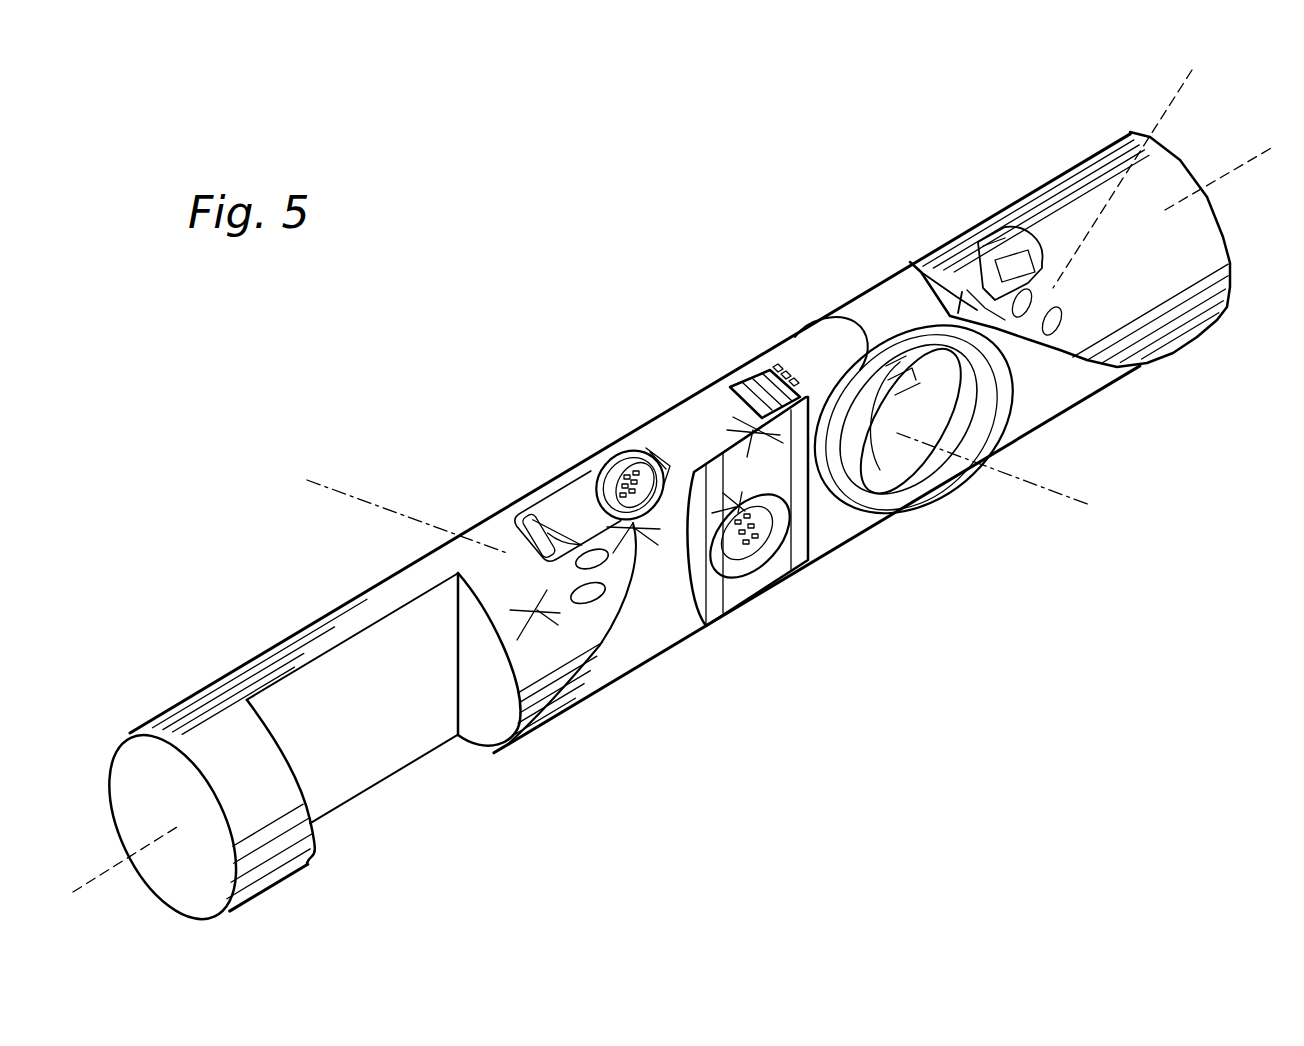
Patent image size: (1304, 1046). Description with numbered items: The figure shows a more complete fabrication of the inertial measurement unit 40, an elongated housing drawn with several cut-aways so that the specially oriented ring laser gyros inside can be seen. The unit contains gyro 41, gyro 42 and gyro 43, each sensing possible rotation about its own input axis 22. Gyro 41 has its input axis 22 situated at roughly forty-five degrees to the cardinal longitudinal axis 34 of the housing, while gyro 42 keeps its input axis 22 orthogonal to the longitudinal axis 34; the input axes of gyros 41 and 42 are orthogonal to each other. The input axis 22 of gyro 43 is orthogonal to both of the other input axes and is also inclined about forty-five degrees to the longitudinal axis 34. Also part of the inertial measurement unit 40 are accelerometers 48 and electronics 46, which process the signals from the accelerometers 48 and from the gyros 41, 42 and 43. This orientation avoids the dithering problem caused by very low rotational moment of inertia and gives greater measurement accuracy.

The input axis 22 is at (345, 497).
The cardinal longitudinal axis 34 is at (115, 866).
The inertial measurement unit 40 is at (860, 243).
The gyro 41 is at (995, 268).
The gyro 42 is at (907, 477).
The gyro 43 is at (547, 540).
The electronics 46 is at (281, 642).
The accelerometers 48 is at (643, 473).